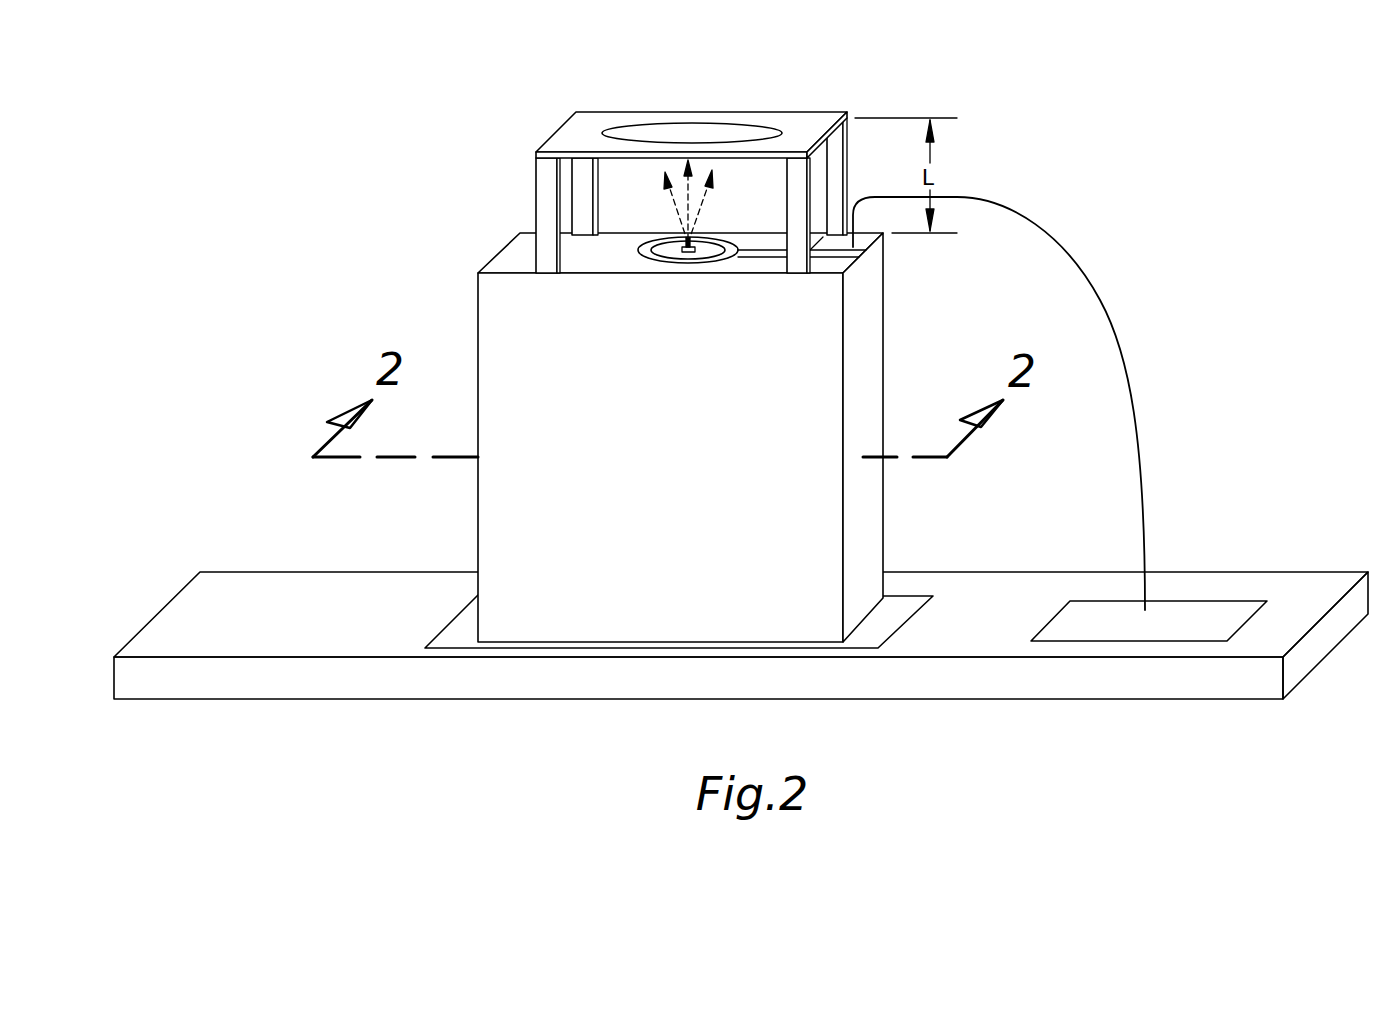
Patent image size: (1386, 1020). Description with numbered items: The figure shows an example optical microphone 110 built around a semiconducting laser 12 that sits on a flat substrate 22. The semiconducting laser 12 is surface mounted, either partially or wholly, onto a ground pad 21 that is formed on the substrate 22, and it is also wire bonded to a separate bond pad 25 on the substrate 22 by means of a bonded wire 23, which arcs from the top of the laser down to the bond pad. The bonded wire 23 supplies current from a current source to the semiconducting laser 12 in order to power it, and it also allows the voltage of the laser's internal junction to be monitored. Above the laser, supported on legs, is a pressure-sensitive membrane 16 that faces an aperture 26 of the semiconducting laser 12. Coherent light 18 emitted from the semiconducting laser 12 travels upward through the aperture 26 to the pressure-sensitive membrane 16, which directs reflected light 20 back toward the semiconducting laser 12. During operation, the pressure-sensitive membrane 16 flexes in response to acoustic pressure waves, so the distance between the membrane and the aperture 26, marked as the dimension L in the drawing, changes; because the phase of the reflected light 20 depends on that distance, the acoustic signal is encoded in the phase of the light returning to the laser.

The optical microphone 110 is at (368, 112).
The semiconducting laser 12 is at (488, 303).
The pressure-sensitive membrane 16 is at (690, 132).
The coherent light 18 is at (686, 164).
The reflected light 20 is at (657, 260).
The ground pad 21 is at (453, 633).
The substrate 22 is at (576, 689).
The bonded wire 23 is at (1038, 223).
The bond pad 25 is at (1203, 613).
The aperture 26 is at (693, 255).